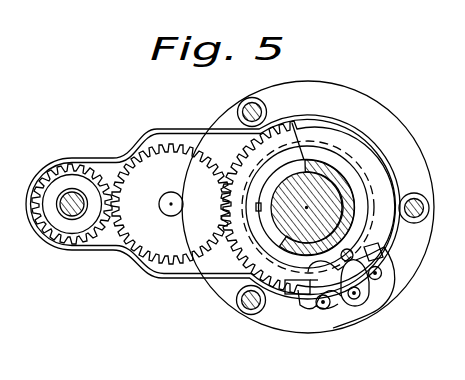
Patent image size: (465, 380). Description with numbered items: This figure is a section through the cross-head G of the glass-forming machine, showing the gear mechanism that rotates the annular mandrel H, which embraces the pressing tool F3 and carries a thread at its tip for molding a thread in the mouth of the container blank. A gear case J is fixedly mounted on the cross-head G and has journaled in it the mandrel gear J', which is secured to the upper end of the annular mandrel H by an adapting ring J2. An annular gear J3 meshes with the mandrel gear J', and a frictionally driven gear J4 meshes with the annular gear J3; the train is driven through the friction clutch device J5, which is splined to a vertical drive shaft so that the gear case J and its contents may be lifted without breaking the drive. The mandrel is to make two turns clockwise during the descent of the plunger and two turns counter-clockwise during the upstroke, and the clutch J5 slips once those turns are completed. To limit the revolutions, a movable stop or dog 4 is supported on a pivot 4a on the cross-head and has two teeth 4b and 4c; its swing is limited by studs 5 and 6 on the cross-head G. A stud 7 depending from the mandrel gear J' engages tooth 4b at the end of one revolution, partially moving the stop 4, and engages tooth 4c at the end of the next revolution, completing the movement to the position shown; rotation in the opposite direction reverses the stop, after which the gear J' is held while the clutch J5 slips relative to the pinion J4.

The mandrel gear J' is at (308, 168).
The adapting ring J2 is at (343, 167).
The annular gear J3 is at (143, 228).
The frictionally driven gear J4 is at (70, 162).
The friction clutch device J5 is at (70, 214).
The gear case J is at (213, 219).
The cross-head G is at (362, 98).
The annular mandrel H is at (348, 192).
The pressing tool (mandrel) F3 is at (336, 184).
The movable stop (dog) 4 is at (360, 296).
The pivot 4a is at (352, 308).
The tooth 4b is at (308, 292).
The tooth 4c is at (306, 274).
The stud 5 is at (382, 273).
The stud 6 is at (322, 309).
The stud 7 is at (383, 246).